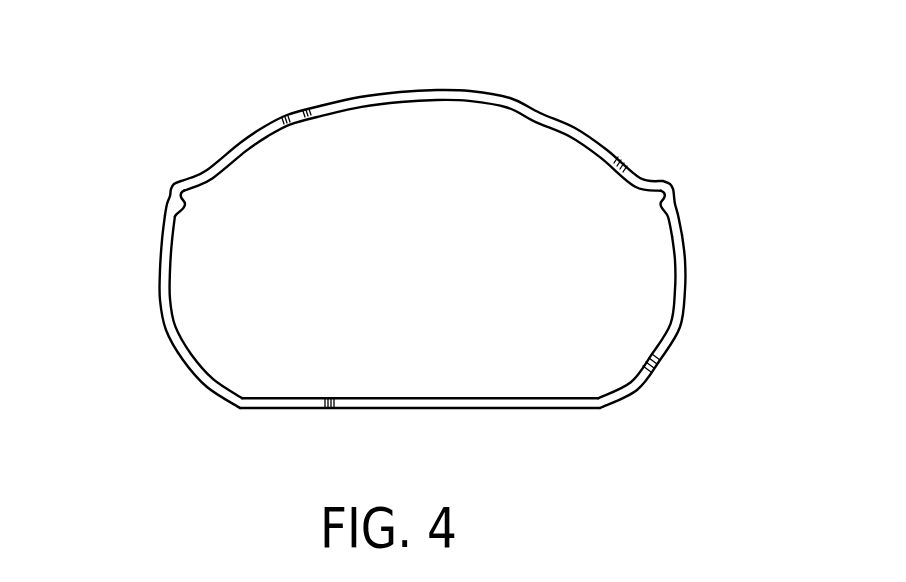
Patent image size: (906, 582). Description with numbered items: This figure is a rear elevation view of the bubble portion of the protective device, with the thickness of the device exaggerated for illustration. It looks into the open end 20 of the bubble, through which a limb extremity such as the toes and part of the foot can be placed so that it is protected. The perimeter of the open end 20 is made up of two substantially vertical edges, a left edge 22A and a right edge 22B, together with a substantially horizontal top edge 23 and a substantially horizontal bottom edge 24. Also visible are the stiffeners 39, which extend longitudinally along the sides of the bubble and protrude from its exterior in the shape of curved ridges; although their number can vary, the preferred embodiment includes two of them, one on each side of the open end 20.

The open end 20 is at (428, 242).
The left edge 22A is at (685, 248).
The right edge 22B is at (163, 260).
The top edge 23 is at (437, 90).
The bottom edge 24 is at (437, 410).
The stiffeners 39 is at (170, 192).